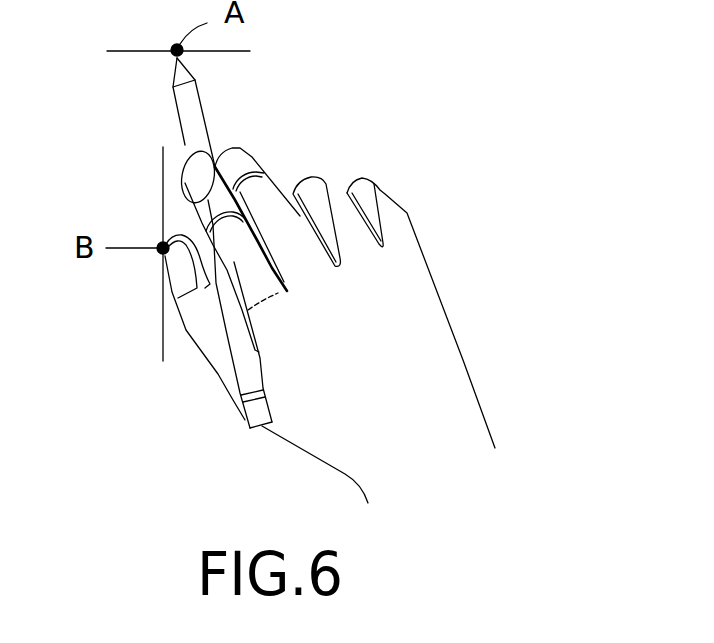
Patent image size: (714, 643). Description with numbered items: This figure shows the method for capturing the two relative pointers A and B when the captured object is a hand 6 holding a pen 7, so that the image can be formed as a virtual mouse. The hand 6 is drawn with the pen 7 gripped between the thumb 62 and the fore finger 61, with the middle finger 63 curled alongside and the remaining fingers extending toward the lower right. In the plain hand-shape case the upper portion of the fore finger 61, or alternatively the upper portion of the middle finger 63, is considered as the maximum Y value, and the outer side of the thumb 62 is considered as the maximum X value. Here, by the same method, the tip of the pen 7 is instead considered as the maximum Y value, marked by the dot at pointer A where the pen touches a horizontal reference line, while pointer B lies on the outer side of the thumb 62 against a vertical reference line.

The hand 6 is at (462, 336).
The pen 7 is at (193, 125).
The fore finger 61 is at (238, 248).
The thumb 62 is at (212, 345).
The middle finger 63 is at (263, 195).